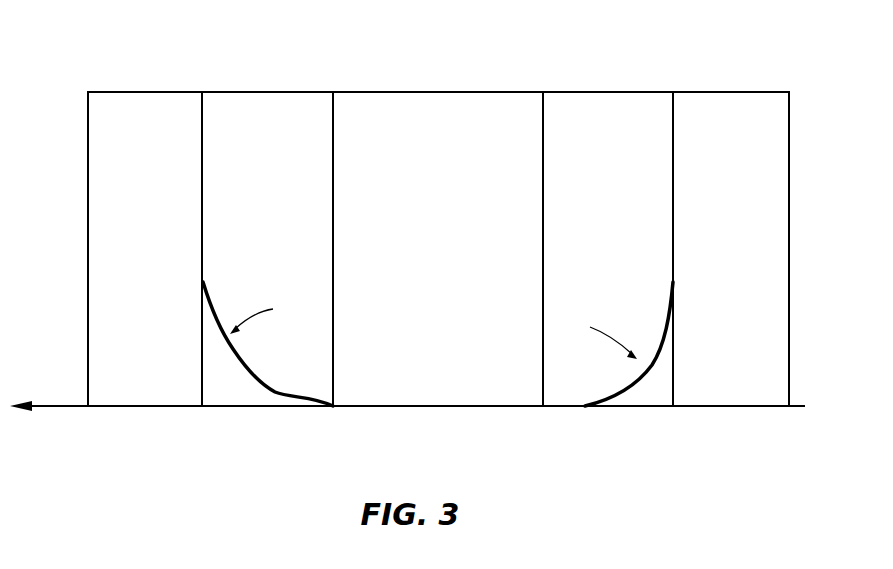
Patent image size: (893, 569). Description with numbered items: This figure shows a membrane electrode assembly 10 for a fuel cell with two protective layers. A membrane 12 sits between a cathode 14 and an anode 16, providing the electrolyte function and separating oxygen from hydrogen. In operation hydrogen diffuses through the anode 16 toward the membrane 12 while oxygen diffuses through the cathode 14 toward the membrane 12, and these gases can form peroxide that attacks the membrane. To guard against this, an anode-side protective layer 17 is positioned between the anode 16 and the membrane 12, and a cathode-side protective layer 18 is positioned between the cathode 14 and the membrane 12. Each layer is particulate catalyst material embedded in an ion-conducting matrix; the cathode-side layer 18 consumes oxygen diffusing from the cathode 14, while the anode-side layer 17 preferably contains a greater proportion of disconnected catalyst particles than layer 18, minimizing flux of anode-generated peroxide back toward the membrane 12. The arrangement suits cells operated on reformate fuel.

The membrane electrode assembly 10 is at (693, 69).
The membrane 12 is at (473, 399).
The cathode 14 is at (740, 399).
The anode 16 is at (124, 398).
The anode-side protective layer 17 is at (247, 398).
The cathode-side protective layer 18 is at (566, 398).